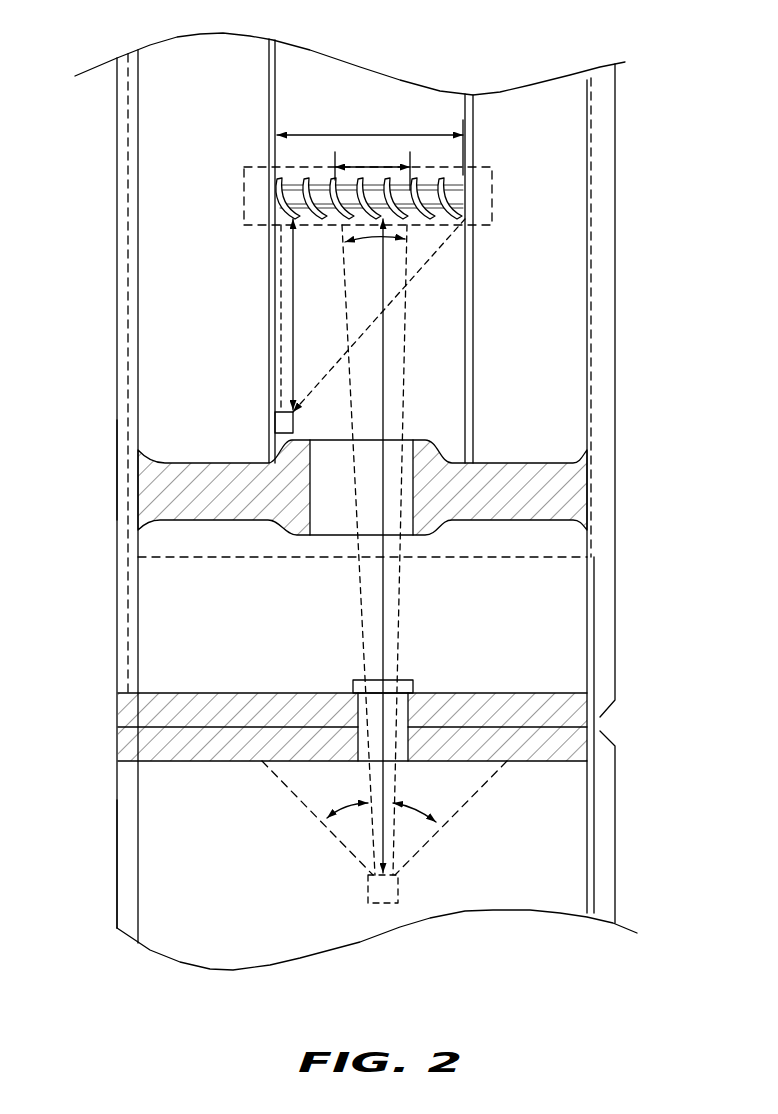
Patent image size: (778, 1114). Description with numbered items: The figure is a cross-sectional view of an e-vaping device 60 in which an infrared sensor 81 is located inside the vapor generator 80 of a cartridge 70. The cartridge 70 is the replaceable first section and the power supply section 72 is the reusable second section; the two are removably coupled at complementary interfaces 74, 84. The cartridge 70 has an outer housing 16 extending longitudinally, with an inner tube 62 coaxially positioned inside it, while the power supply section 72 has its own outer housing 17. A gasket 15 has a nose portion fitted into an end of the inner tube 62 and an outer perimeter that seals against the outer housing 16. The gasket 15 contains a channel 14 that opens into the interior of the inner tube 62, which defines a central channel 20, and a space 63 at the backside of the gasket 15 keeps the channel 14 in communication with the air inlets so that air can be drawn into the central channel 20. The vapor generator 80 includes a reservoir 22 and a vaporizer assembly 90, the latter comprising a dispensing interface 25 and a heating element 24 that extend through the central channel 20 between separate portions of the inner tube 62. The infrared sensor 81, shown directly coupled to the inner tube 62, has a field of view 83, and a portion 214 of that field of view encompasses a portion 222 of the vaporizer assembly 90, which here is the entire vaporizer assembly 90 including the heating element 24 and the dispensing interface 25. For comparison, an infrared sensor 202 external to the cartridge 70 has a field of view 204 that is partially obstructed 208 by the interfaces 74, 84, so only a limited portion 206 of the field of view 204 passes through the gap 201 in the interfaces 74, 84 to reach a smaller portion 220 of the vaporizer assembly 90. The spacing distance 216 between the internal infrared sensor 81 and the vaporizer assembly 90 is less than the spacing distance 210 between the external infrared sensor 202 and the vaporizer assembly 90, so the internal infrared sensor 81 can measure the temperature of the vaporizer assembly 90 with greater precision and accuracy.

The channel 14 is at (345, 505).
The gasket 15 is at (207, 505).
The outer housing 16 is at (117, 240).
The outer housing 17 is at (117, 848).
The central channel 20 is at (345, 93).
The reservoir 22 is at (545, 151).
The heating element 24 is at (278, 196).
The dispensing interface 25 is at (443, 200).
The e-vaping device 60 is at (690, 431).
The inner tube 62 is at (473, 115).
The space 63 is at (243, 637).
The cartridge 70 is at (615, 248).
The power supply section 72 is at (615, 830).
The interface 74 is at (128, 712).
The vapor generator 80 is at (117, 460).
The infrared sensor 81 is at (275, 422).
The field of view 83 is at (278, 322).
The interface 84 is at (127, 748).
The vaporizer assembly 90 is at (310, 167).
The gap 201 is at (353, 680).
The infrared sensor 202 is at (368, 880).
The field of view 204 is at (300, 800).
The limited portion 206 is at (412, 236).
The obstruction 208 is at (440, 818).
The spacing distance 210 is at (366, 795).
The portion of field of view 214 is at (381, 304).
The spacing distance 216 is at (293, 375).
The portion of vaporizer assembly 220 is at (383, 167).
The portion of vaporizer assembly 222 is at (362, 135).